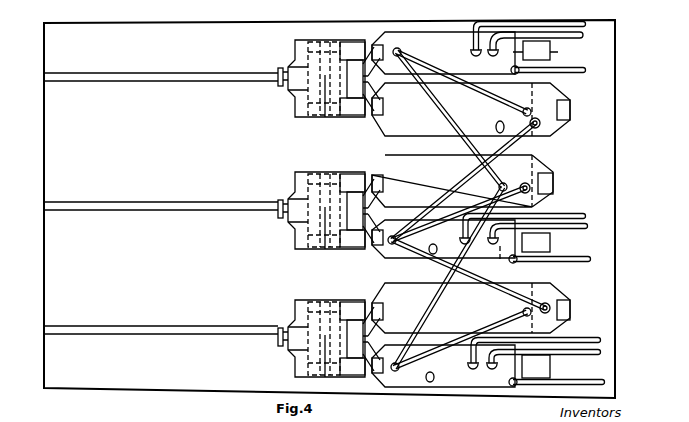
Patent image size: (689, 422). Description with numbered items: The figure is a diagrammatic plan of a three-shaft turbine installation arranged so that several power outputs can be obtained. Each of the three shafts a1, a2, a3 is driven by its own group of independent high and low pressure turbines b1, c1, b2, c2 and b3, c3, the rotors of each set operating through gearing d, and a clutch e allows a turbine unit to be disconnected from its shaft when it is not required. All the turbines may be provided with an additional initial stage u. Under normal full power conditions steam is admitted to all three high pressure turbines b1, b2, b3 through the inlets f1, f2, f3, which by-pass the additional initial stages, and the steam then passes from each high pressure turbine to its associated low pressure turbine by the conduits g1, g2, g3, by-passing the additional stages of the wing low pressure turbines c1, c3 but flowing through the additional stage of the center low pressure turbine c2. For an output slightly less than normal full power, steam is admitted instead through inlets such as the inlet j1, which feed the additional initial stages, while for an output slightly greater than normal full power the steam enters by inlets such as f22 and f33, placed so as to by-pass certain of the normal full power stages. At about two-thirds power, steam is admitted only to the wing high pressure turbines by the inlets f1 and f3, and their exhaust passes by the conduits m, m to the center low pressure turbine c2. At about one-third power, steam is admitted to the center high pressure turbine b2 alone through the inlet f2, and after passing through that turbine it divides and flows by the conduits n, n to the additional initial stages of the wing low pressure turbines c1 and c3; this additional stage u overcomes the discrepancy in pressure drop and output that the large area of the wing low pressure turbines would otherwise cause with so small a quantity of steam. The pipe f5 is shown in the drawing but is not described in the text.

The shaft a1 is at (98, 74).
The shaft a2 is at (95, 205).
The shaft a3 is at (107, 329).
The gearing d is at (322, 300).
The clutch e is at (373, 334).
The high pressure turbine b1 is at (443, 53).
The high pressure turbine b2 is at (443, 241).
The high pressure turbine b3 is at (420, 388).
The low pressure turbine c1 is at (471, 109).
The low pressure turbine c2 is at (462, 181).
The low pressure turbine c3 is at (471, 308).
The conduit m is at (438, 316).
The conduit n is at (508, 149).
The inlet f22 is at (485, 205).
The inlet f33 is at (470, 275).
The conduit g1 is at (500, 108).
The conduit g2 is at (432, 233).
The conduit g3 is at (430, 361).
The additional initial stage u is at (528, 270).
The inlet f1 is at (592, 259).
The inlet f2 is at (583, 229).
The inlet f3 is at (540, 359).
The discharge pipe f5 is at (559, 388).
The inlet j1 is at (555, 75).